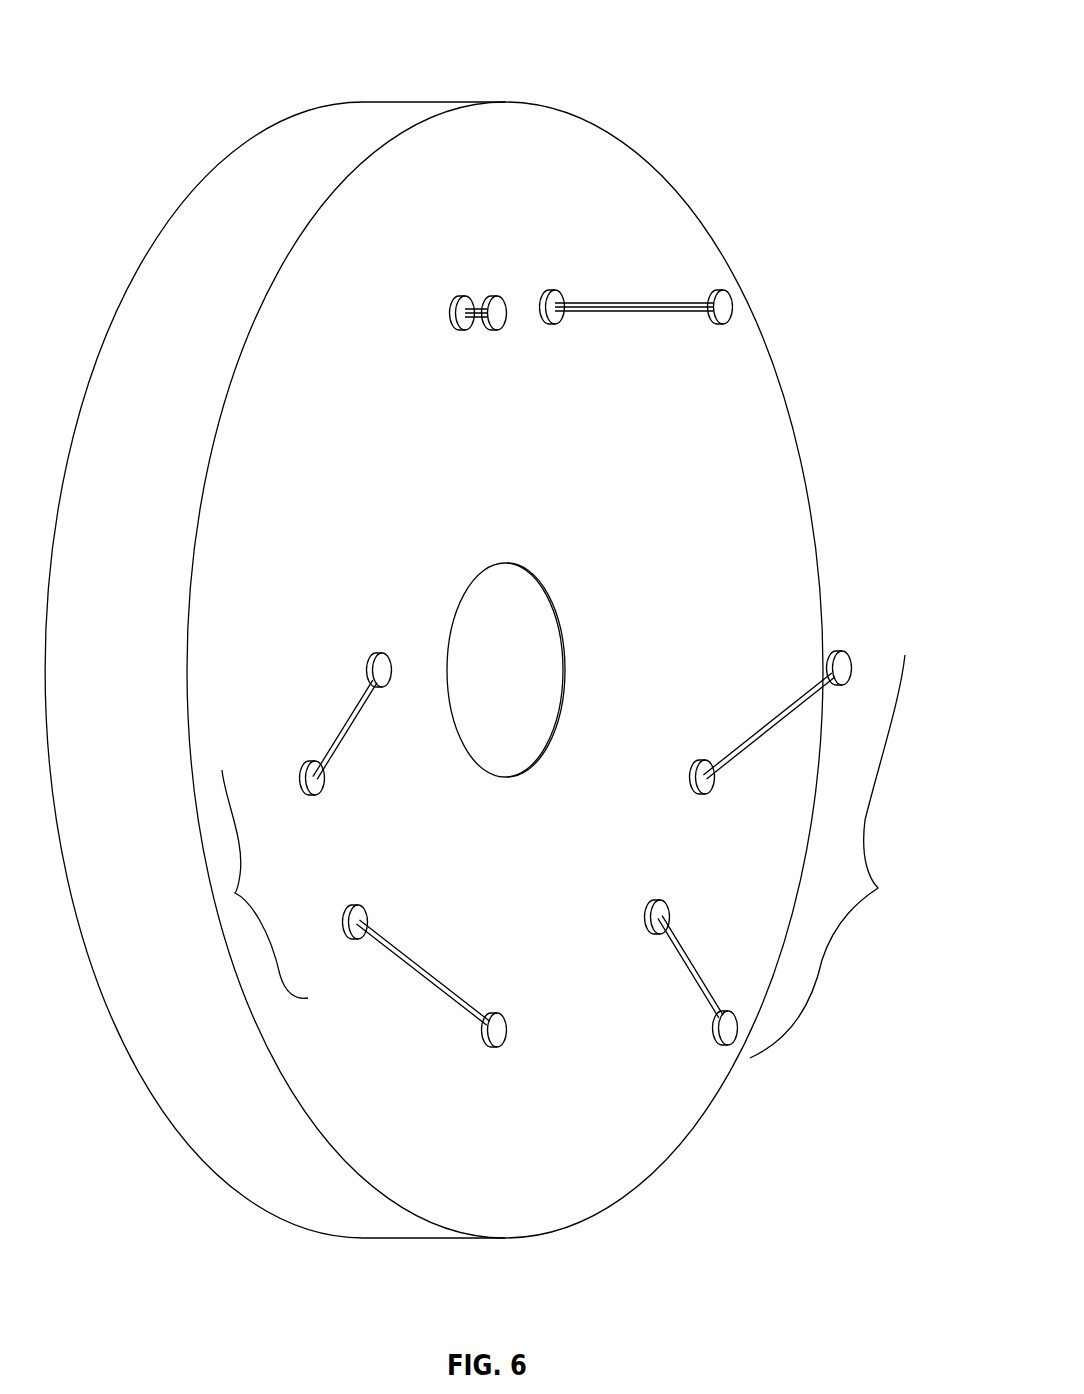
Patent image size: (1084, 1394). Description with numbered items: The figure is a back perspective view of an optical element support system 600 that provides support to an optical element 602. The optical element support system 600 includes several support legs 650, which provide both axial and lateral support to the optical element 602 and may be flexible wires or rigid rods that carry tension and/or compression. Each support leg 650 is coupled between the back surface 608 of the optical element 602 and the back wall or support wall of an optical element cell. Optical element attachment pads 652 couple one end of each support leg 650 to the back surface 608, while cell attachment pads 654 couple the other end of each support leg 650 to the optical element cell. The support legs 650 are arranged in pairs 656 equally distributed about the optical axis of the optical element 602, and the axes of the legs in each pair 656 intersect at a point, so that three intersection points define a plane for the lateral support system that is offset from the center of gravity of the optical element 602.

The optical element support system 600 is at (814, 44).
The optical element 602 is at (151, 133).
The back surface 608 is at (585, 178).
The support legs 650 is at (688, 303).
The optical element attachment pads 652 is at (456, 315).
The cell attachment pads 654 is at (510, 305).
The pairs 656 is at (235, 893).